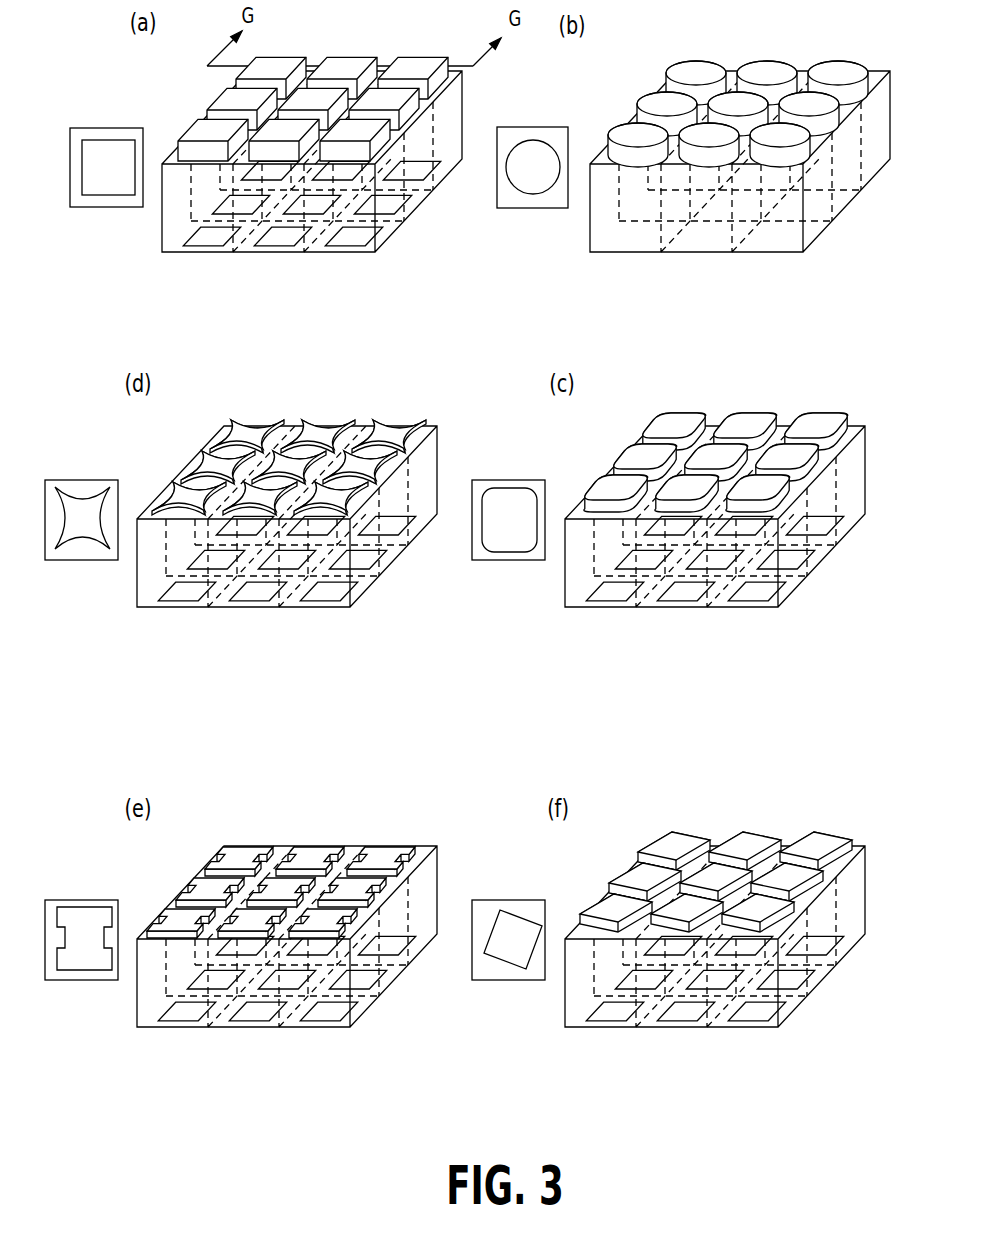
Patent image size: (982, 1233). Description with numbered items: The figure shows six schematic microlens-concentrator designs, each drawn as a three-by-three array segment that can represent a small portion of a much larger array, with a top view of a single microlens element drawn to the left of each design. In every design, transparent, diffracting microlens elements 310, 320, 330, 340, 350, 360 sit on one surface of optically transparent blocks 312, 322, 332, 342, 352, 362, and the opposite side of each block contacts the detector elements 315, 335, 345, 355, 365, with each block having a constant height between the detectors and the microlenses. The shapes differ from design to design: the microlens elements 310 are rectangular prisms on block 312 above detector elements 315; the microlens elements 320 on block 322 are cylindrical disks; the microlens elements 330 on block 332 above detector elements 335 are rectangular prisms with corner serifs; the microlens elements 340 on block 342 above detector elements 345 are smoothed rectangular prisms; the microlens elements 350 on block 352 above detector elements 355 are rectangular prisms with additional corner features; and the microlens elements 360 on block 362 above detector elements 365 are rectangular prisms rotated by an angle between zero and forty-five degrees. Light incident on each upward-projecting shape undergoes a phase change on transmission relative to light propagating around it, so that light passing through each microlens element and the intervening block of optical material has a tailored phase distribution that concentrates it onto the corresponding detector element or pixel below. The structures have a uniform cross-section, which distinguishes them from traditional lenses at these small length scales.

The microlens element 310 is at (259, 132).
The optically transparent block 312 is at (271, 161).
The detector element 315 is at (285, 221).
The microlens element 320 is at (682, 134).
The optically transparent block 322 is at (700, 161).
The microlens element 330 is at (235, 488).
The optically transparent block 332 is at (247, 516).
The detector element 335 is at (259, 580).
The microlens element 340 is at (660, 486).
The optically transparent block 342 is at (675, 516).
The detector element 345 is at (685, 580).
The microlens element 350 is at (230, 908).
The optically transparent block 352 is at (247, 936).
The detector element 355 is at (259, 1000).
The microlens element 360 is at (662, 906).
The optically transparent block 362 is at (675, 936).
The detector element 365 is at (687, 1001).